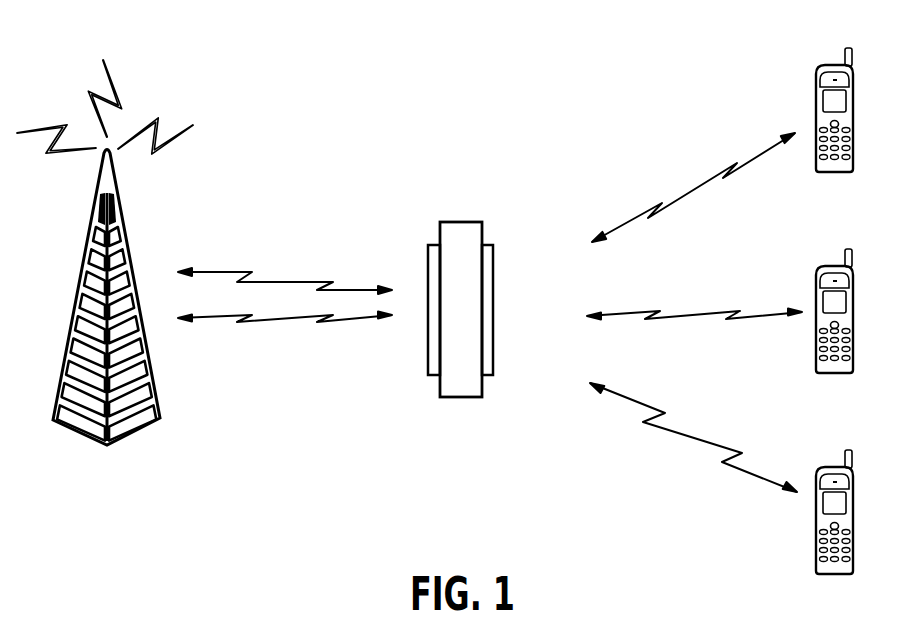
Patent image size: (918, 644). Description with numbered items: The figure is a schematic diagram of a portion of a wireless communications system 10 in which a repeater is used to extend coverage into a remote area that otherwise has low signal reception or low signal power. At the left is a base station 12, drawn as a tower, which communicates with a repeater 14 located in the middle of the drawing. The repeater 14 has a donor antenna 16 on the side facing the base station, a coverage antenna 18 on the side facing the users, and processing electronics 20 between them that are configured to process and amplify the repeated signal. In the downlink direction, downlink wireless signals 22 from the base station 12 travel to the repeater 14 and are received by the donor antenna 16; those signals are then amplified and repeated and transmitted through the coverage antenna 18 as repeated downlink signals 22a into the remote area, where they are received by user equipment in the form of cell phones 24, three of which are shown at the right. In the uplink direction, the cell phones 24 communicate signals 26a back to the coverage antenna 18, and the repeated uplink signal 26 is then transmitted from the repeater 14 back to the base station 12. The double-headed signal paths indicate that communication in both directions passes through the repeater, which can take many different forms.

The wireless communications system 10 is at (563, 80).
The base station 12 is at (123, 220).
The repeater 14 is at (465, 244).
The donor antenna 16 is at (428, 262).
The coverage antenna 18 is at (494, 298).
The processing electronics 20 is at (481, 217).
The downlink wireless signals 22 is at (292, 282).
The repeated downlink signals 22a is at (709, 181).
The cell phones 24 is at (853, 110).
The uplink signal 26 is at (281, 323).
The uplink signals from UE 26a is at (679, 316).